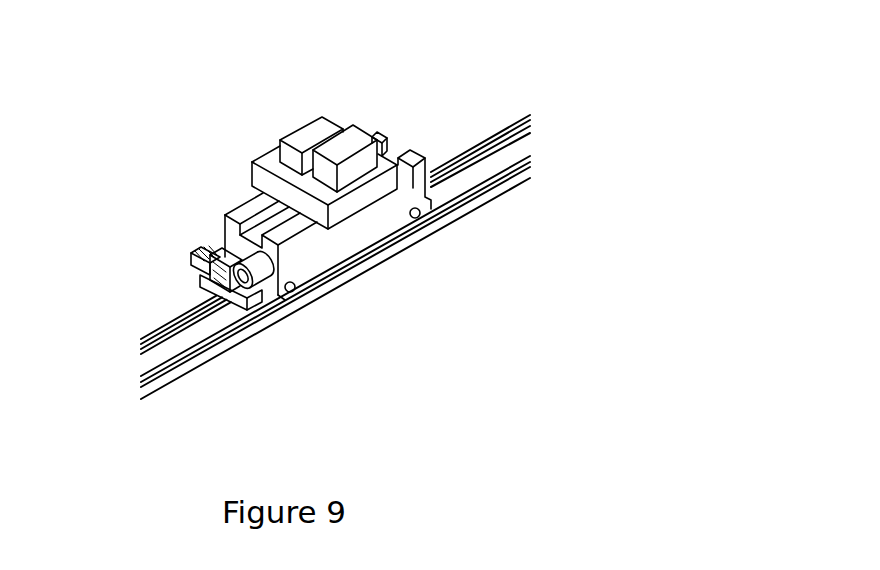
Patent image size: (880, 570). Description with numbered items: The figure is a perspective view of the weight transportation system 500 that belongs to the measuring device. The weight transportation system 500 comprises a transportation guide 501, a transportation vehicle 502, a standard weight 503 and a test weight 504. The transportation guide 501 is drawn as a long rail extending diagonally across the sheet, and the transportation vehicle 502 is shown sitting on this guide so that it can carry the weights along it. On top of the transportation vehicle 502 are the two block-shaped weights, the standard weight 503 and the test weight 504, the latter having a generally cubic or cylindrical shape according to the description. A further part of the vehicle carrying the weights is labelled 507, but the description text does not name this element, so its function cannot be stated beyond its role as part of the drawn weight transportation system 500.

The weight transportation system 500 is at (310, 253).
The transportation guide 501 is at (198, 305).
The transportation vehicle 502 is at (243, 200).
The standard weight 503 is at (312, 133).
The test weight 504 is at (345, 158).
The mounting plate 507 is at (368, 193).